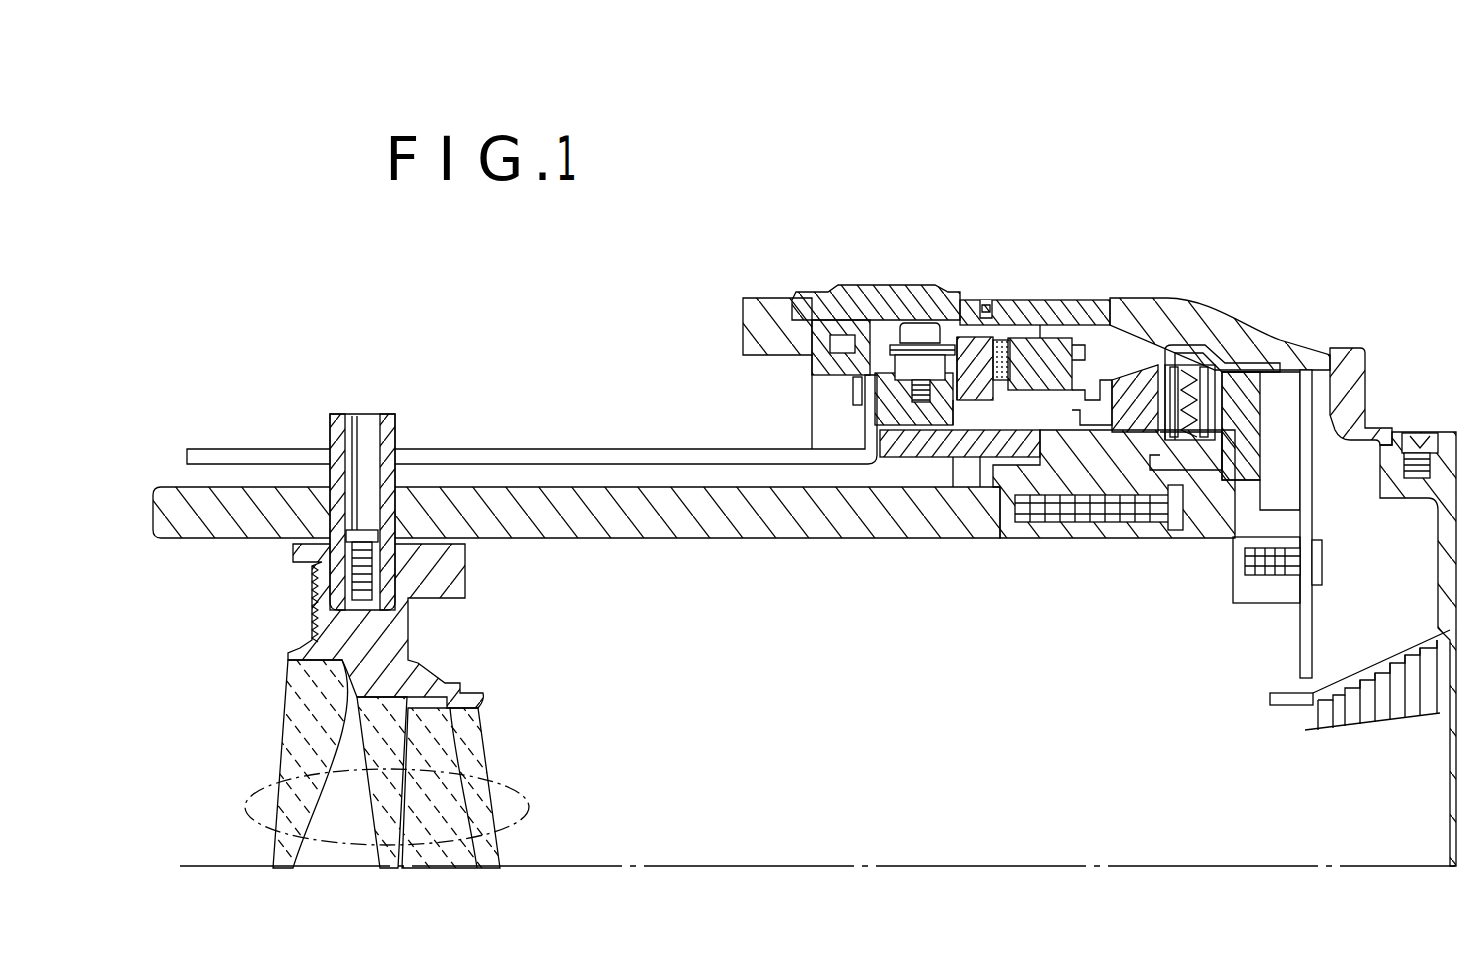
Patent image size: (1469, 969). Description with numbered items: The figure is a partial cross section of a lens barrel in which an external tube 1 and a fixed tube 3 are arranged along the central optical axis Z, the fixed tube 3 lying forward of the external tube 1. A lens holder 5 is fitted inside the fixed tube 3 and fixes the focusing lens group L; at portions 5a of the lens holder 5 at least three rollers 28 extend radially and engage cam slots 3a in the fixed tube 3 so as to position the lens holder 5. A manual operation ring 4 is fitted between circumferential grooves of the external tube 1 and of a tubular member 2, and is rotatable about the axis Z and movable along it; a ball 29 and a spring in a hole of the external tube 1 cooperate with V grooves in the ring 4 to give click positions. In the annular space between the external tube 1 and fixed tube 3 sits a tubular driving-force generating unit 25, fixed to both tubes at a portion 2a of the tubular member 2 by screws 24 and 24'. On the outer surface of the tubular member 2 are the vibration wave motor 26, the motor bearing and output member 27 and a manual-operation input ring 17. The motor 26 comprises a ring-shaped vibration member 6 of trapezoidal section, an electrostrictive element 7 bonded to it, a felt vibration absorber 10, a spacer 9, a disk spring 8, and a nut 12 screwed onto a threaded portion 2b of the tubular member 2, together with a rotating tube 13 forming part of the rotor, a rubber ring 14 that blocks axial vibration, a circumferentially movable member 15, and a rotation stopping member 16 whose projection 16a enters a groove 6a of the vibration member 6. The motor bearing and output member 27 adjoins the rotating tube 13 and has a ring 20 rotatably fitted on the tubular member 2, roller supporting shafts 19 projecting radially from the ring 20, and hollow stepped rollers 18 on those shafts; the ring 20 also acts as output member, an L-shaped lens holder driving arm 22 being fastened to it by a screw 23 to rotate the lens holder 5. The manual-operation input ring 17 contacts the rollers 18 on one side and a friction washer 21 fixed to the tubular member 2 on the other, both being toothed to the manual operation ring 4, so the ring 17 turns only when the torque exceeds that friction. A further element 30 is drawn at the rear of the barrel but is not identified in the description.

The external tube 1 is at (1288, 330).
The tubular member 2 is at (765, 328).
The portion of the tubular member 2a is at (1105, 480).
The threaded portion 2b is at (1262, 440).
The fixed tube 3 is at (690, 500).
The cam slots 3a is at (323, 513).
The manual operation ring 4 is at (887, 327).
The lens holder 5 is at (435, 572).
The portions 5a is at (312, 602).
The ring-shaped vibration member 6 is at (1153, 357).
The groove 6a is at (1087, 360).
The electrostrictive element 7 is at (1183, 363).
The ring-shaped disk spring 8 is at (1210, 350).
The ring-shaped spacer 9 is at (1200, 363).
The ring-shaped vibration absorber 10 is at (1240, 430).
The ring-shaped nut 12 is at (1262, 340).
The rotating tube 13 is at (975, 400).
The rubber ring 14 is at (1000, 385).
The ring-shaped circumferentially movable member 15 is at (1040, 410).
The rotation stopping member 16 is at (1092, 440).
The projection 16a is at (1127, 360).
The manual-operation input ring 17 is at (862, 330).
The rollers 18 is at (960, 330).
The roller supporting shafts 19 is at (935, 320).
The ring 20 is at (913, 353).
The friction washer 21 is at (818, 362).
The lens holder driving arm 22 is at (640, 449).
The screw 23 is at (853, 405).
The screw 24 is at (1178, 536).
The screw 24' is at (1095, 585).
The driving-force generating unit 25 is at (1332, 403).
The vibration wave motor 26 is at (1302, 168).
The motor bearing and output member 27 is at (945, 430).
The rollers 28 is at (405, 412).
The ball 29 is at (987, 320).
The mount 30 is at (1340, 345).
The focusing lens group L is at (522, 790).
The central axis Z is at (1085, 863).